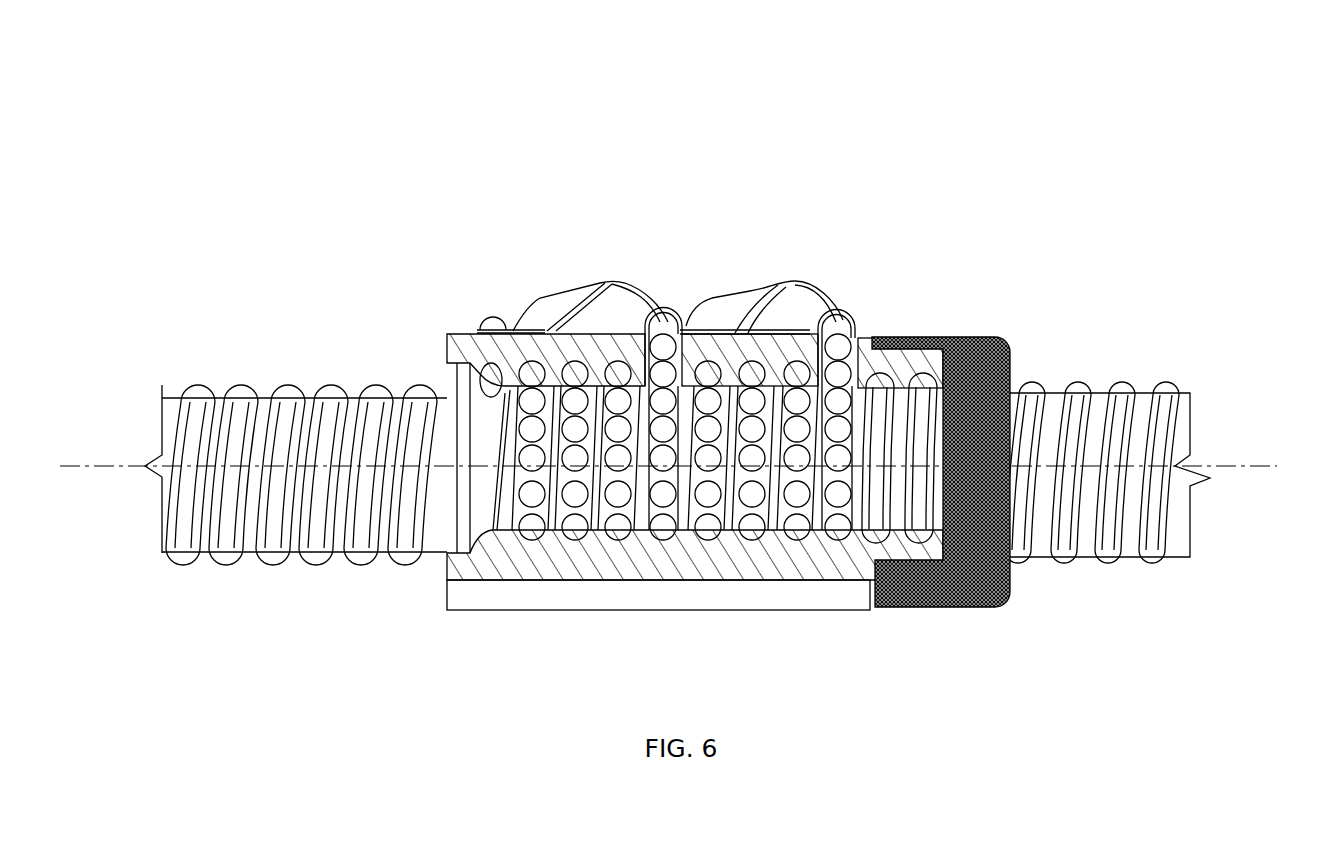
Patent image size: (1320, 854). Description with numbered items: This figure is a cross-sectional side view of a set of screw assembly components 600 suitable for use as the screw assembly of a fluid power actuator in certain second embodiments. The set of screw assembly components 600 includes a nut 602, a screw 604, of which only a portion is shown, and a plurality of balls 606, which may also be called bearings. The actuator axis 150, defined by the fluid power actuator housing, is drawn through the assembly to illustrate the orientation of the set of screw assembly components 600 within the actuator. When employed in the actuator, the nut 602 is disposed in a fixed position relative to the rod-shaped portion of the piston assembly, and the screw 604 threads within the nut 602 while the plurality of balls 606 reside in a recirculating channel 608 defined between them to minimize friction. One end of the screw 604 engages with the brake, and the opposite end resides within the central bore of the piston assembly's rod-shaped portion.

The set of screw assembly components 600 is at (138, 88).
The actuator axis 150 is at (1232, 468).
The nut 602 is at (457, 329).
The screw 604 is at (1078, 380).
The plurality of balls 606 is at (667, 331).
The recirculating channel 608 is at (838, 323).